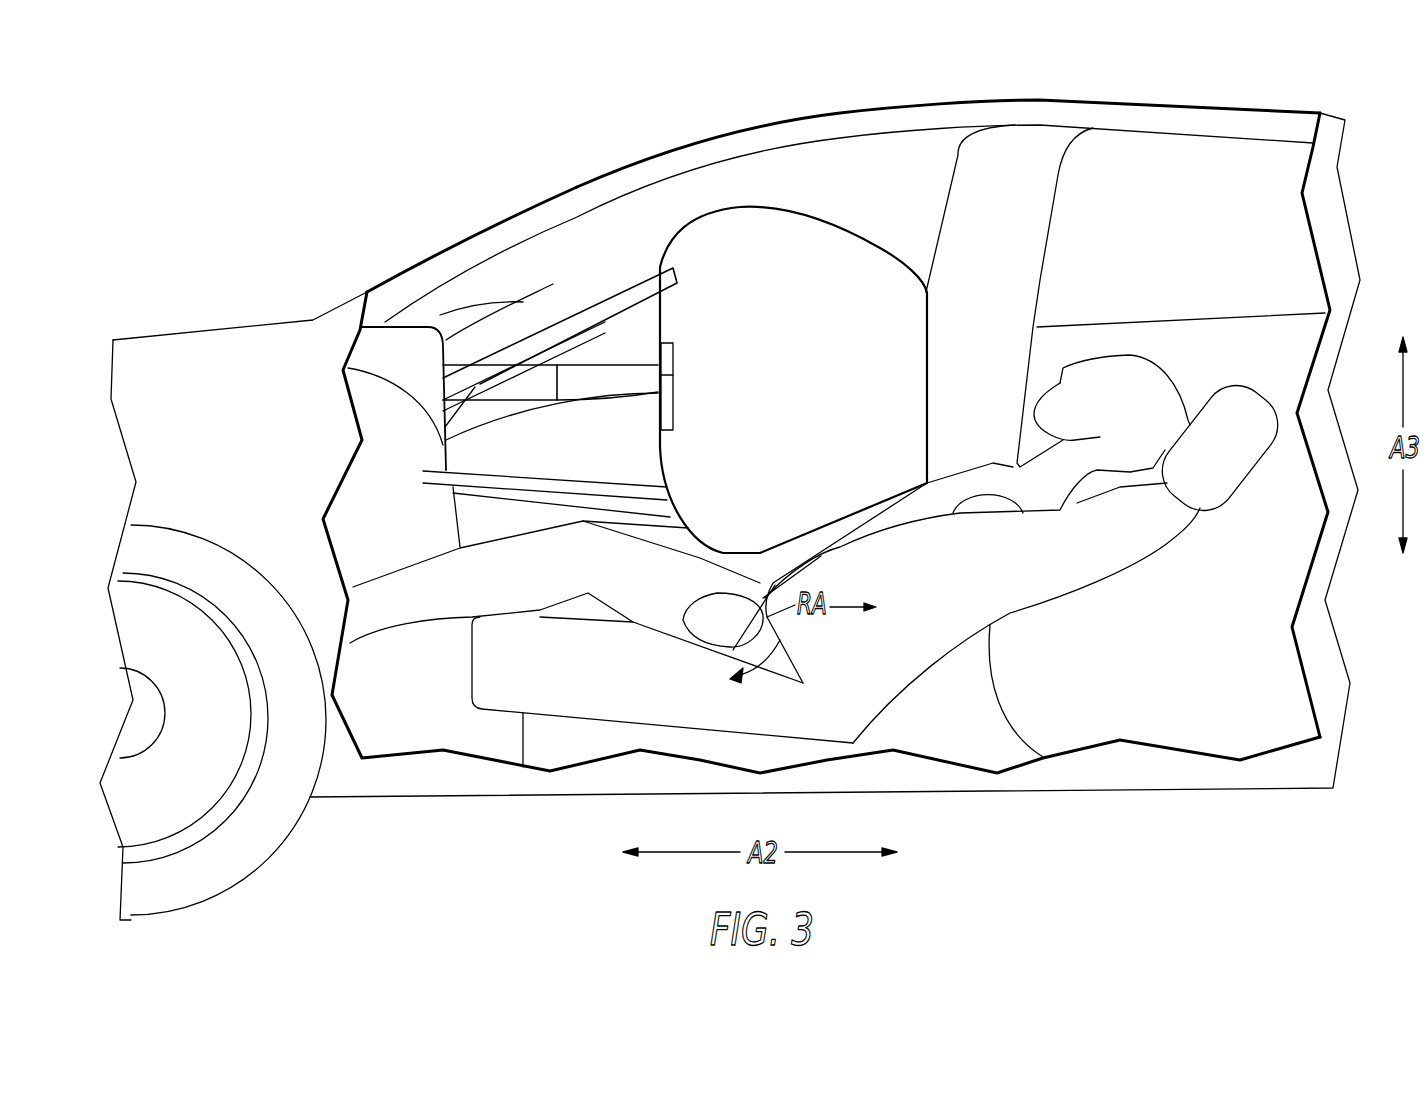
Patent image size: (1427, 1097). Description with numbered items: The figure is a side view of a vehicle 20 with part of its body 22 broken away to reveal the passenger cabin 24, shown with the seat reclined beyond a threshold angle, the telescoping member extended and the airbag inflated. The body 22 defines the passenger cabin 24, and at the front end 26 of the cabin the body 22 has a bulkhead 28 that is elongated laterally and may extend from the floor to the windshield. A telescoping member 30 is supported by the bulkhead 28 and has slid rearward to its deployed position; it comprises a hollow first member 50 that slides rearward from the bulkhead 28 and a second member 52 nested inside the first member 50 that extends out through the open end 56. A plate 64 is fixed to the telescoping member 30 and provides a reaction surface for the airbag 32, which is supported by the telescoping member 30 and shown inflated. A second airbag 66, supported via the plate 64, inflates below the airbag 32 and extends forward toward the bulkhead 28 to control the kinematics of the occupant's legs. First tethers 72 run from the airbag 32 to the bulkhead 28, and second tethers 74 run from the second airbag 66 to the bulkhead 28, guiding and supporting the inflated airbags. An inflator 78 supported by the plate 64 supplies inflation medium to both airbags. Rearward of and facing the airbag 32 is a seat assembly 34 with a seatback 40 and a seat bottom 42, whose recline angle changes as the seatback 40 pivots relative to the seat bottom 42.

The vehicle 20 is at (488, 162).
The body 22 is at (202, 360).
The passenger cabin 24 is at (860, 190).
The front end 26 is at (403, 288).
The bulkhead 28 is at (383, 348).
The telescoping member 30 is at (541, 355).
The airbag 32 is at (750, 207).
The seat assembly 34 is at (903, 690).
The seatback 40 is at (1057, 580).
The seat bottom 42 is at (503, 657).
The first member 50 is at (443, 427).
The second member 52 is at (627, 380).
The open end 56 is at (560, 377).
The plate 64 is at (670, 343).
The second airbag 66 is at (490, 517).
The first tether 72 is at (613, 296).
The second tether 74 is at (433, 507).
The inflator 78 is at (670, 373).